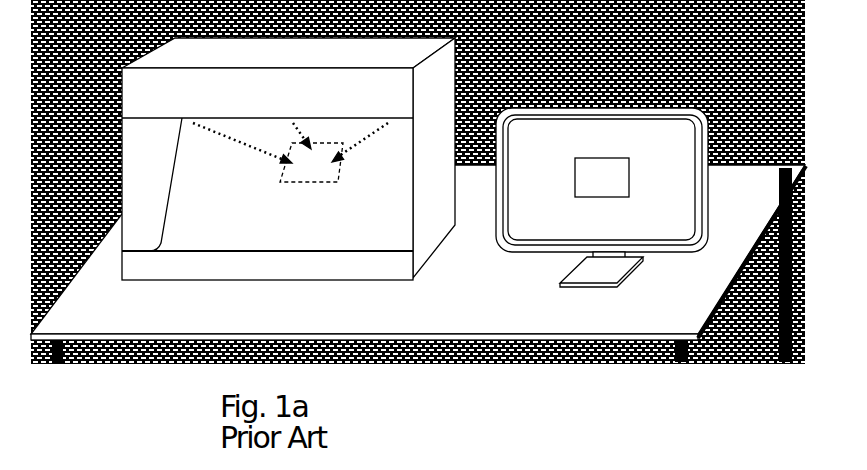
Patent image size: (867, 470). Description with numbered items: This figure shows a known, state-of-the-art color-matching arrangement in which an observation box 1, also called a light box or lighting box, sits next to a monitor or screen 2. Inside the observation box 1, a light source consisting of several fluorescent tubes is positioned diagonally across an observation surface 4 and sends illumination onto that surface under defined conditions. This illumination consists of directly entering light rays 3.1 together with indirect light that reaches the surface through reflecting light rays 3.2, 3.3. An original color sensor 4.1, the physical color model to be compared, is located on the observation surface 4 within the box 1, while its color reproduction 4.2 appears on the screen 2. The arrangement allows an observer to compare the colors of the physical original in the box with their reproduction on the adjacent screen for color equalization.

The observation box 1 is at (158, 268).
The monitor or screen 2 is at (547, 253).
The directly entering light rays 3.1 is at (290, 130).
The reflecting light rays 3.2 is at (229, 147).
The reflecting light rays 3.3 is at (373, 137).
The observation surface 4 is at (183, 229).
The original color sensor 4.1 is at (319, 180).
The color reproduction 4.2 is at (612, 188).